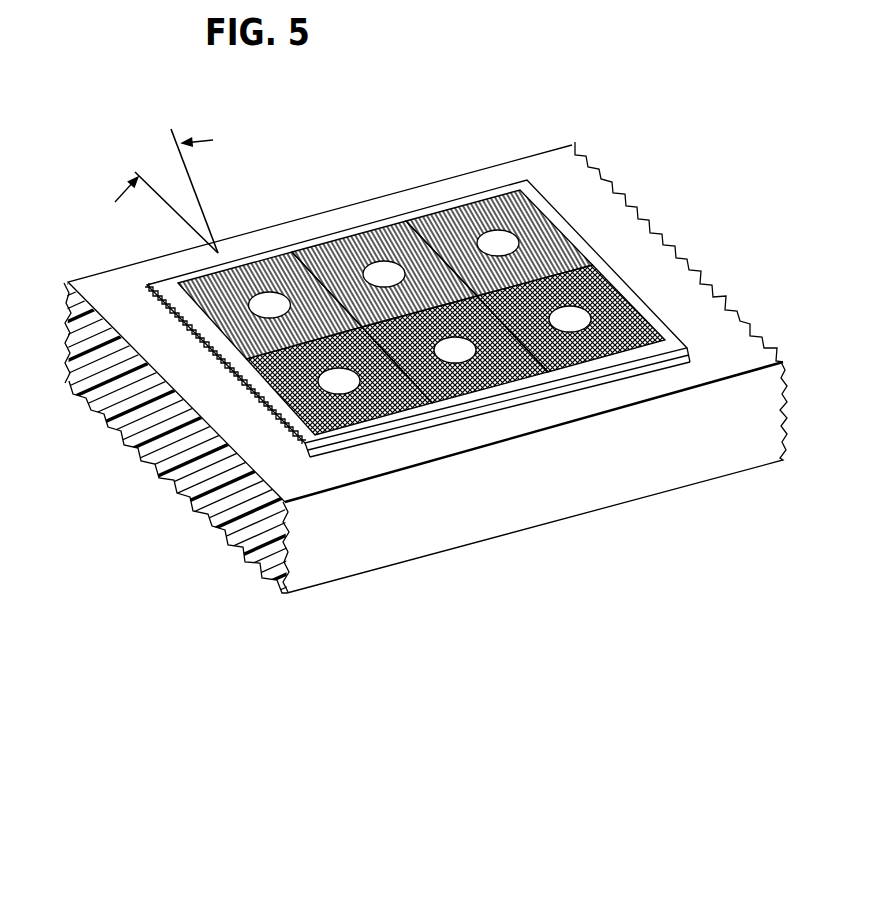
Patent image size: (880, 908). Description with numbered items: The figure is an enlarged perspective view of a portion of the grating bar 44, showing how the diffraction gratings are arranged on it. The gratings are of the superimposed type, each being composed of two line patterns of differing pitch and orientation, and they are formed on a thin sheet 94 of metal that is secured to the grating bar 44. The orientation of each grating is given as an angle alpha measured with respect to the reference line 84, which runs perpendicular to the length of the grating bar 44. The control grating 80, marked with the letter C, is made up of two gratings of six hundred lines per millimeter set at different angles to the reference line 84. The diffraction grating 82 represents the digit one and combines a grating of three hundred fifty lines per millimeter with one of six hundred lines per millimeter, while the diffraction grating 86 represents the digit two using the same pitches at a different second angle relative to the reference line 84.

The grating bar 44 is at (741, 352).
The control grating 80 is at (421, 325).
The diffraction grating 82 is at (270, 270).
The reference line 84 is at (134, 171).
The diffraction grating 86 is at (424, 287).
The thin sheet 94 is at (640, 312).